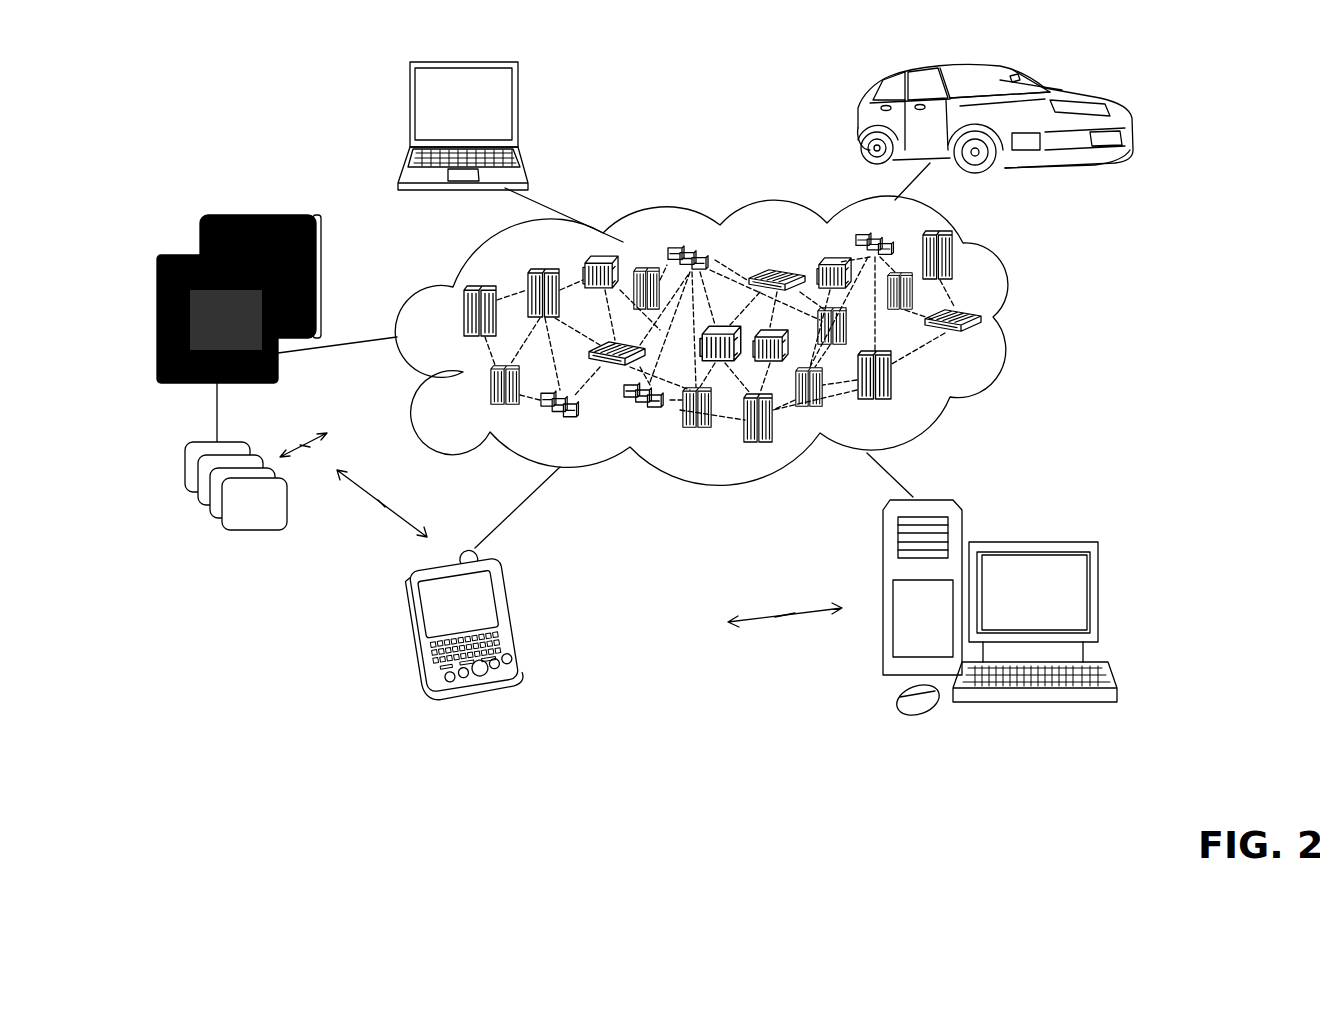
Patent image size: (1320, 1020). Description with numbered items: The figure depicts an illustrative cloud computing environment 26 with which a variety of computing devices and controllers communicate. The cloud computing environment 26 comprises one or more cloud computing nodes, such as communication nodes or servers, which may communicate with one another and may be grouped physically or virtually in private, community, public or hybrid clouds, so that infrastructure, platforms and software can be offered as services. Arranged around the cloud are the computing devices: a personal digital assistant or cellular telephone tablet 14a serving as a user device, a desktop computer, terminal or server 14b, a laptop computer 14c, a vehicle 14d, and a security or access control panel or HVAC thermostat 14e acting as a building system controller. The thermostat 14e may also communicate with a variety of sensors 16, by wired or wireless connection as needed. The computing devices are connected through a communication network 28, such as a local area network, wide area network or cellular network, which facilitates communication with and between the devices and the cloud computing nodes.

The personal digital assistant or cellular telephone tablet 14a is at (510, 612).
The desktop computer/terminal/server 14b is at (1034, 540).
The laptop computer 14c is at (572, 90).
The vehicle 14d is at (964, 118).
The security or access control panel/HVAC thermostat 14e is at (322, 300).
The sensors 16 is at (217, 512).
The cloud computing environment 26 is at (987, 343).
The communication network 28 is at (307, 437).